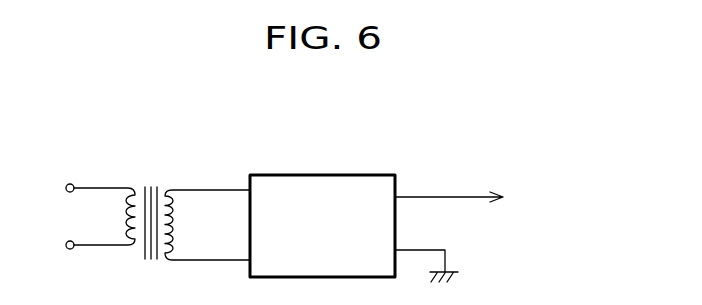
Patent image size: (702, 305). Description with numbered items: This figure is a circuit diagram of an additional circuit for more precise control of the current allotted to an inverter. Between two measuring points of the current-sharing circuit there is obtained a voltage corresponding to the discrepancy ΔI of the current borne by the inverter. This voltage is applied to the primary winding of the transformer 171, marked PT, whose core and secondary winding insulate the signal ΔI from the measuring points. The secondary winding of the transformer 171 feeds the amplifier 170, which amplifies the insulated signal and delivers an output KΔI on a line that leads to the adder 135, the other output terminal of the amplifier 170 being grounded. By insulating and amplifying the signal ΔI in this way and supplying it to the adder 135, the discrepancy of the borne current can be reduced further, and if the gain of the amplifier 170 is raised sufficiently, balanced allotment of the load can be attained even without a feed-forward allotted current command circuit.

The transformer 171 is at (153, 156).
The amplifier 170 is at (328, 175).
The adder 135 is at (491, 211).